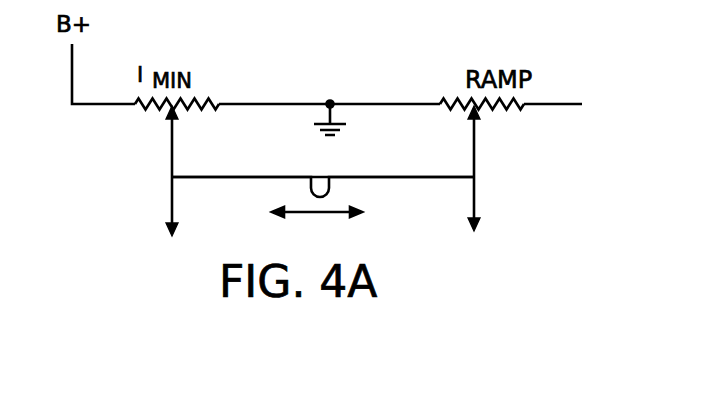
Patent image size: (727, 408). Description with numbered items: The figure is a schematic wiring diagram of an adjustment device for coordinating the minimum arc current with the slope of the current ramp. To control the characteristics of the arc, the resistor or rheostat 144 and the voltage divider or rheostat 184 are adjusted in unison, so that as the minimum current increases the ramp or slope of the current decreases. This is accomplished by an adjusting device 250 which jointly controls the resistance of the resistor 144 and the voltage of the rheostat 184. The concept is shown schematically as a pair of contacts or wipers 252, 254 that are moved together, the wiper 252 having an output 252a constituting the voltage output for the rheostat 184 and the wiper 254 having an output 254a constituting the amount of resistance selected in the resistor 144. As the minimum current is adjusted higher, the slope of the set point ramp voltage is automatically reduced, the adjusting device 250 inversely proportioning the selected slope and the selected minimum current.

The voltage divider 184 is at (217, 102).
The resistor 144 is at (460, 100).
The wiper 252 is at (172, 127).
The output 252a is at (172, 210).
The wiper 254 is at (474, 127).
The output 254a is at (477, 208).
The adjusting device 250 is at (420, 205).